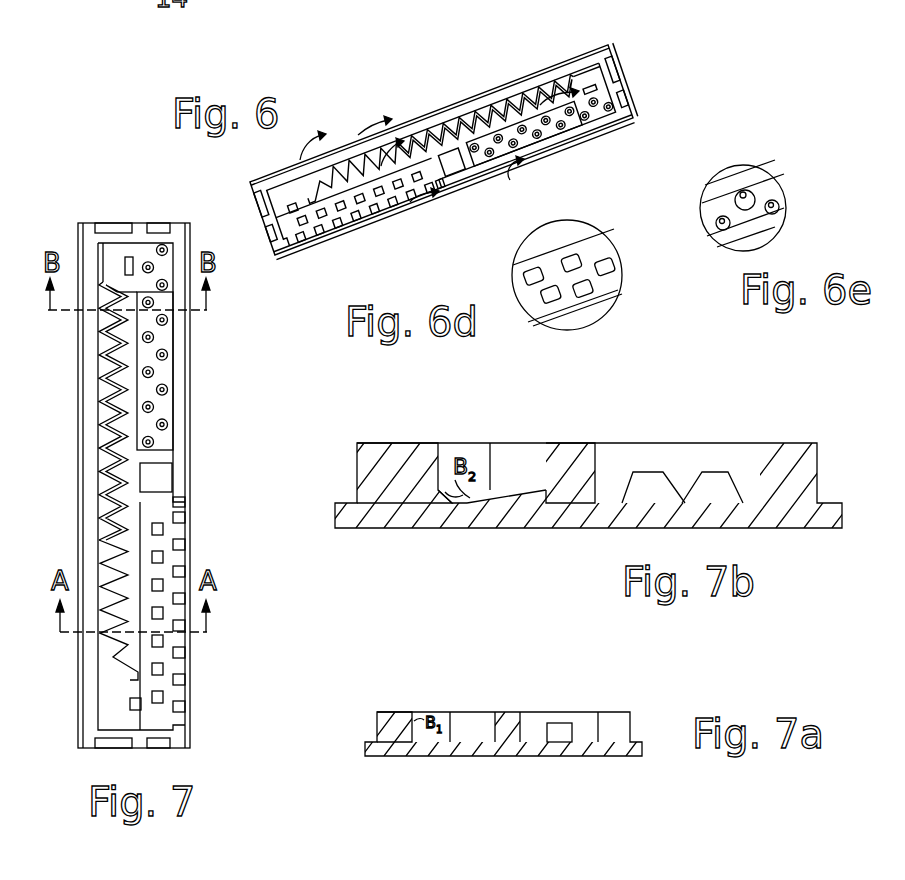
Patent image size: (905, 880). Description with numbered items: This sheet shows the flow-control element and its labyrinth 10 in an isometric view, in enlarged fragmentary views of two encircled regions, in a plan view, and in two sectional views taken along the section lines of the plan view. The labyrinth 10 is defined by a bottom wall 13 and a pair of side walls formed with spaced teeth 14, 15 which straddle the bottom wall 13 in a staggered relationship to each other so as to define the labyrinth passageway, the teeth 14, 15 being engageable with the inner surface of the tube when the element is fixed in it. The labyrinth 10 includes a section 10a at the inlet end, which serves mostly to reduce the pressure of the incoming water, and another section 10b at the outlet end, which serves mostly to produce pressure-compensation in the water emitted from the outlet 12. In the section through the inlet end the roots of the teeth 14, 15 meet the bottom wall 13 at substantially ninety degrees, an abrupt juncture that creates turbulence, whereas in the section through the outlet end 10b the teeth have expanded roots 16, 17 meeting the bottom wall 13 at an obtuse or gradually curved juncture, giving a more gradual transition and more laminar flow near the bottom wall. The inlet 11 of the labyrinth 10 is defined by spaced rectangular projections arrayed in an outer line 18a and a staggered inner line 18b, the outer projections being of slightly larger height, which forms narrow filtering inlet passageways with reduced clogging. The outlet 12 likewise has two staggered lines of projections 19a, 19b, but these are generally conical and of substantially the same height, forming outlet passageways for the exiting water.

In FIG. 6, the labyrinth 10 is at (443, 123).
In FIG. 7, the labyrinth inlet section 10a is at (107, 640).
In FIG. 6, the labyrinth inlet section 10a is at (378, 160).
In FIG. 7, the labyrinth outlet section 10b is at (103, 332).
In FIG. 6, the labyrinth outlet section 10b is at (532, 80).
In FIG. 7, the inlet 11 is at (185, 655).
In FIG. 6, the inlet 11 is at (330, 238).
In FIG. 6D, the inlet 11 is at (516, 278).
In FIG. 7, the outlet 12 is at (170, 340).
In FIG. 6, the outlet 12 is at (565, 122).
In FIG. 6E, the outlet 12 is at (718, 238).
In FIG. 7B, the bottom wall 13 is at (497, 517).
In FIG. 7A, the bottom wall 13 is at (457, 752).
In FIG. 7B, the tooth 14 is at (387, 448).
In FIG. 7A, the tooth 14 is at (393, 712).
In FIG. 7B, the tooth 15 is at (573, 442).
In FIG. 7A, the tooth 15 is at (507, 712).
In FIG. 7B, the expanded root 16 is at (453, 503).
In FIG. 7B, the expanded root 17 is at (528, 500).
In FIG. 7, the outer line of projections 18a is at (185, 708).
In FIG. 6D, the outer line of projections 18a is at (610, 285).
In FIG. 7A, the outer line of projections 18a is at (612, 712).
In FIG. 7, the inner line of projections 18b is at (160, 698).
In FIG. 6D, the inner line of projections 18b is at (578, 242).
In FIG. 7A, the inner line of projections 18b is at (560, 723).
In FIG. 7, the outlet projections 19a is at (168, 427).
In FIG. 6E, the outlet projections 19a is at (716, 218).
In FIG. 7B, the outlet projections 19a is at (728, 472).
In FIG. 7, the outlet projections 19b is at (150, 405).
In FIG. 6E, the outlet projections 19b is at (750, 190).
In FIG. 7B, the outlet projections 19b is at (642, 477).